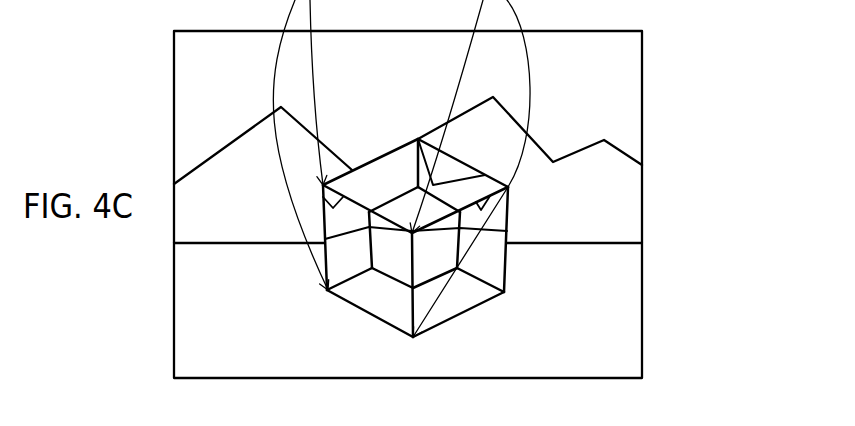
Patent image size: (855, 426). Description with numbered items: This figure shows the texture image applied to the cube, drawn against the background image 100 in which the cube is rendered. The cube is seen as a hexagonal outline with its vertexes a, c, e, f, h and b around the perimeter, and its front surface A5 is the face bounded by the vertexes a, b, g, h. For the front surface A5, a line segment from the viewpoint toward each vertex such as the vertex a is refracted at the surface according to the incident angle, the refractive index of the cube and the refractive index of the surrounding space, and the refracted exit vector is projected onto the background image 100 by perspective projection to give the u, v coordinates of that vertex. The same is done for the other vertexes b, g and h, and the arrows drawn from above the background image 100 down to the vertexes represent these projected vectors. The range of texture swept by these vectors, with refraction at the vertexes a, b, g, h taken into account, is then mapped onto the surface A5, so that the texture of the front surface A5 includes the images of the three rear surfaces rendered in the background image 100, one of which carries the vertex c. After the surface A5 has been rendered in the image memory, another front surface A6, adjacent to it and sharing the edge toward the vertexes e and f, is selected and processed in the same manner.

The background image 100 is at (612, 70).
The vertex a is at (322, 186).
The vertex b is at (327, 290).
The vertex c is at (418, 139).
The vertex e is at (510, 187).
The vertex f is at (504, 292).
The vertex g is at (395, 317).
The vertex h is at (413, 337).
The front surface A5 is at (412, 233).
The another front surface A6 is at (457, 297).